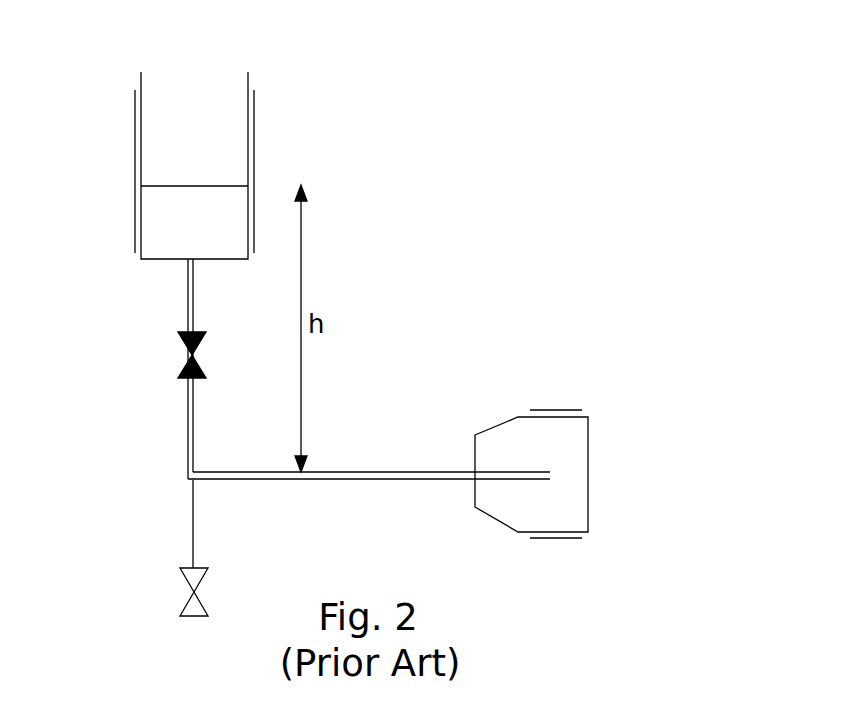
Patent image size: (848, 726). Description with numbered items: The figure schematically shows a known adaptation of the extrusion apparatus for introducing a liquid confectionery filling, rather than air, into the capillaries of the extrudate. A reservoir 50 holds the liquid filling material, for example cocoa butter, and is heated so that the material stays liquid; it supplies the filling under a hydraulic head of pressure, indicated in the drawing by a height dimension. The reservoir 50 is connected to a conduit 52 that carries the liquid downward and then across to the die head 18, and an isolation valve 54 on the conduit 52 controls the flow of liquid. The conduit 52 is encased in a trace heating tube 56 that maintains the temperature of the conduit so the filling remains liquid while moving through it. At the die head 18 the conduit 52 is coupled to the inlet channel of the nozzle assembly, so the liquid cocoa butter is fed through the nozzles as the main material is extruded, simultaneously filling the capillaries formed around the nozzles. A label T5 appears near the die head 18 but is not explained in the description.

The reservoir 50 is at (249, 122).
The conduit 52 is at (194, 430).
The isolation valve 54 is at (178, 344).
The trace heating tube 56 is at (368, 480).
The die head 18 is at (505, 432).
The temperature zone T5 is at (548, 540).